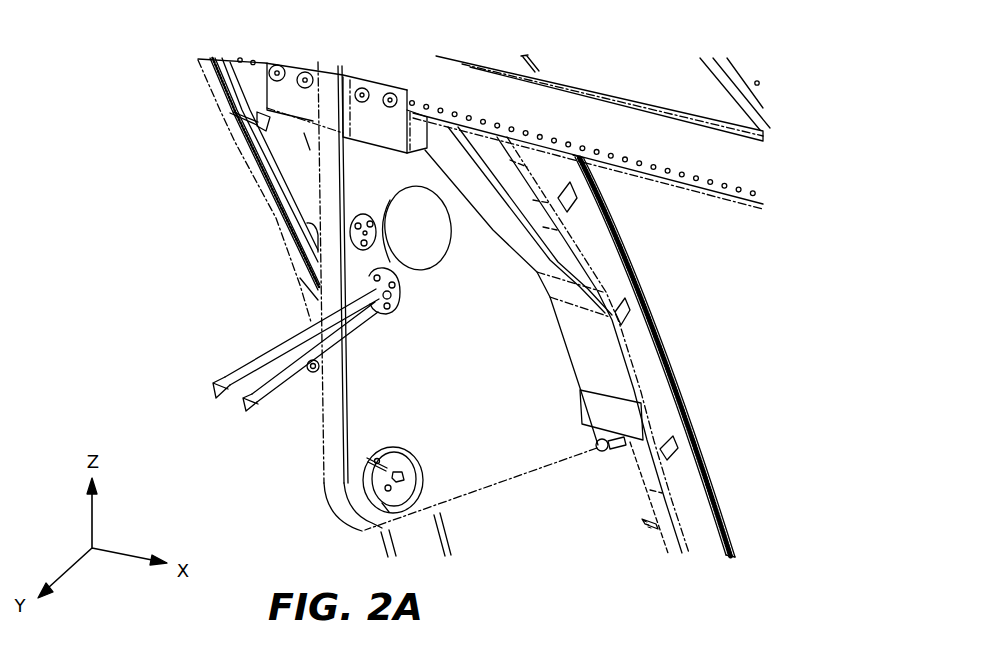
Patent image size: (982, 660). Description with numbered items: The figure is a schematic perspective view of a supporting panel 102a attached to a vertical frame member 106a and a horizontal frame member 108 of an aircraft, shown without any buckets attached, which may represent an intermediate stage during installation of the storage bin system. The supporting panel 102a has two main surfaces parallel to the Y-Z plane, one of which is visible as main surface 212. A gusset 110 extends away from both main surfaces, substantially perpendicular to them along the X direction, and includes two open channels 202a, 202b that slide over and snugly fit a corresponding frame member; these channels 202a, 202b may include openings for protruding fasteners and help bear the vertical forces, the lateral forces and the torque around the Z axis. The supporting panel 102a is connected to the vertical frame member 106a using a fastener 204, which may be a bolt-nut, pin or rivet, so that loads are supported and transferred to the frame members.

The supporting panel 102a is at (551, 483).
The vertical frame member 106a is at (655, 400).
The horizontal frame member 108 is at (693, 148).
The gusset 110 is at (593, 332).
The channel 202a is at (375, 108).
The channel 202b is at (290, 102).
The fastener 204 is at (625, 446).
The main surface 212 is at (490, 440).